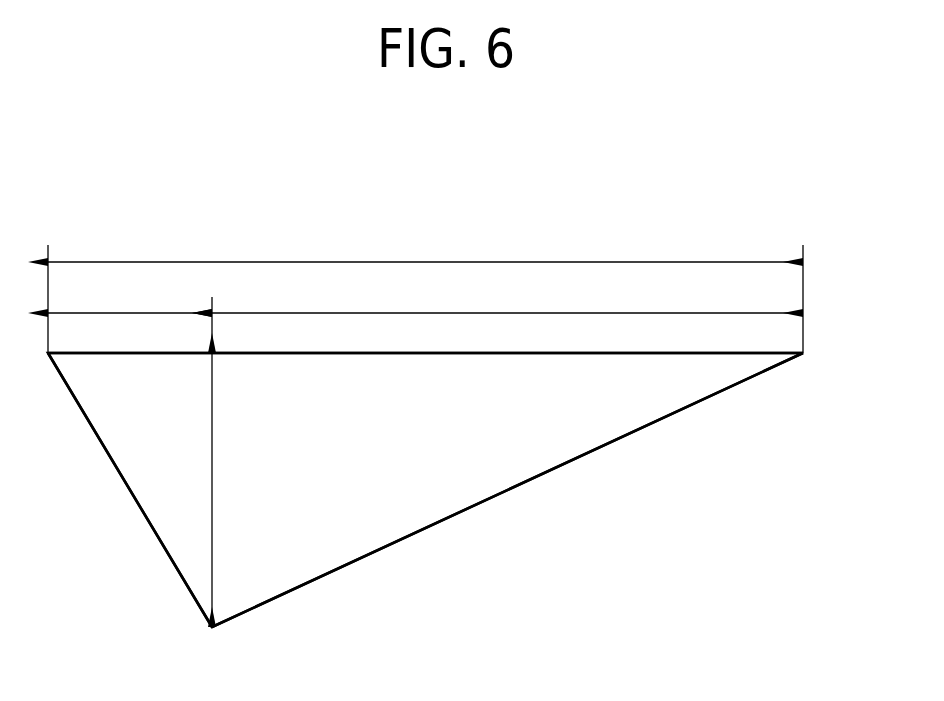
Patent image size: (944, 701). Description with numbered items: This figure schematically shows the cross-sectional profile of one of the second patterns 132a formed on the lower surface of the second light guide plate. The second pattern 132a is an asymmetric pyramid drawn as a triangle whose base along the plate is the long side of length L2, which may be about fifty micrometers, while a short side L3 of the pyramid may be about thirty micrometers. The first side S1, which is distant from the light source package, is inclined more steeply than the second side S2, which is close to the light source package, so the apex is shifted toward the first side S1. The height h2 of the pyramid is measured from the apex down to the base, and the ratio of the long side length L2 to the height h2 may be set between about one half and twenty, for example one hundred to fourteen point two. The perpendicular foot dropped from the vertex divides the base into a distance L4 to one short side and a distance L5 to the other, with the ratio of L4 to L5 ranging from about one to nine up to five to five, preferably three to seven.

The second patterns 132a is at (718, 219).
The long side length L2 is at (425, 287).
The short side length L3 is at (425, 372).
The distance to one short side L4 is at (130, 314).
The distance to the other short side L5 is at (507, 295).
The height h2 is at (237, 490).
The first side S1 is at (127, 490).
The second side S2 is at (542, 475).